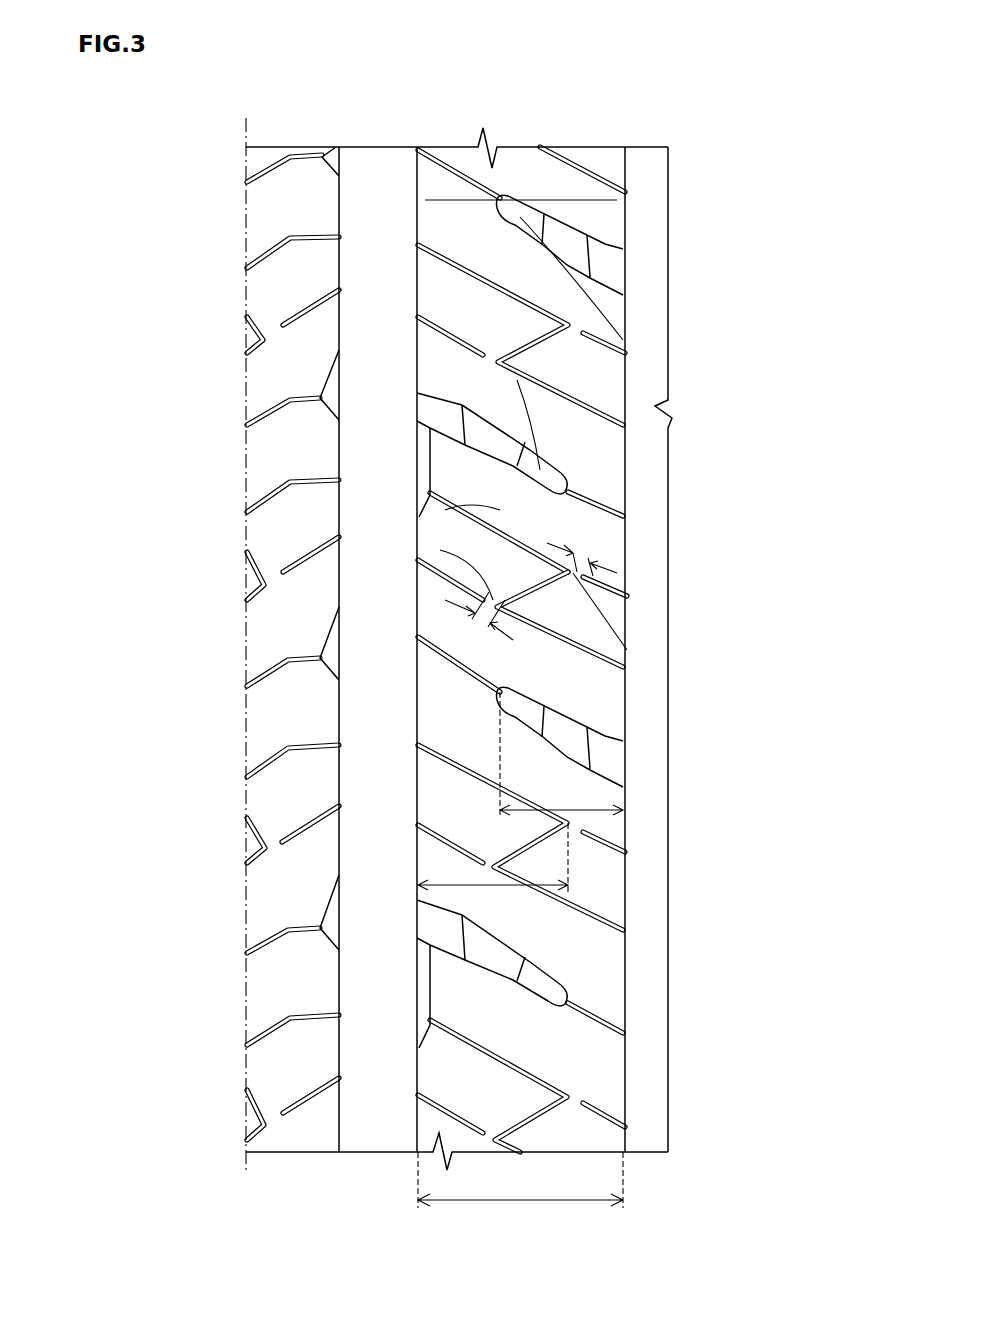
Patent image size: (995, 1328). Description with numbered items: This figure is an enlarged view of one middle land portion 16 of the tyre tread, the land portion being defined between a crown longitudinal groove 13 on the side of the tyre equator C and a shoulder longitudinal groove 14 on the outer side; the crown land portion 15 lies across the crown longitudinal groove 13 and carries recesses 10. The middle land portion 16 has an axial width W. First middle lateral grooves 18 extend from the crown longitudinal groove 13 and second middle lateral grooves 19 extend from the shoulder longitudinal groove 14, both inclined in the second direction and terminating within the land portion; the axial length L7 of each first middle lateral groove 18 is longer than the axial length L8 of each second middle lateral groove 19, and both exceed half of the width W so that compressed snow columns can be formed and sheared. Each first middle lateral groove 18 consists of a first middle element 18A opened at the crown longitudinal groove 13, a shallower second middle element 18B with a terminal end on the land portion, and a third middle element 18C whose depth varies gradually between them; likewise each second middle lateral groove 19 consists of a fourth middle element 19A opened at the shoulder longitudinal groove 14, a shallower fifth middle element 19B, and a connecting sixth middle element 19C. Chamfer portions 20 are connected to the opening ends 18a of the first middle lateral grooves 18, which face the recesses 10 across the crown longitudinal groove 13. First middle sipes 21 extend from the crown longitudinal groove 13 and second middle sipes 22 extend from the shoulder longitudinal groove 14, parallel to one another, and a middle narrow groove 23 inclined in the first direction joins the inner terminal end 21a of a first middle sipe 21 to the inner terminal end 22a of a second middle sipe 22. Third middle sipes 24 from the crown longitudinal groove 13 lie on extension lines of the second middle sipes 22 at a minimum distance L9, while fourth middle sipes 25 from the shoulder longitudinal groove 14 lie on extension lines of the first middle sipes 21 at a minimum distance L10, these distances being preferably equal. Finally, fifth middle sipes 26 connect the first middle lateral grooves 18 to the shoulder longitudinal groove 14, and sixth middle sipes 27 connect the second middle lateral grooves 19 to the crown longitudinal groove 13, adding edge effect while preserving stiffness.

The recess 10 is at (414, 410).
The crown longitudinal groove 13 is at (378, 186).
The shoulder longitudinal groove 14 is at (647, 180).
The crown land portion 15 is at (290, 186).
The middle land portion 16 is at (540, 180).
The first middle lateral groove 18 is at (132, 238).
The first middle element 18A is at (517, 380).
The second middle element 18B is at (438, 408).
The third middle element 18C is at (490, 438).
The opening end 18a is at (427, 470).
The second middle lateral groove 19 is at (766, 228).
The fourth middle element 19A is at (610, 265).
The fifth middle element 19B is at (600, 345).
The sixth middle element 19C is at (590, 290).
The chamfer portion 20 is at (445, 510).
The first middle sipe 21 is at (560, 558).
The inner terminal end 21a is at (600, 610).
The second middle sipe 22 is at (580, 660).
The inner terminal end 22a is at (445, 575).
The middle narrow groove 23 is at (535, 595).
The third middle sipe 24 is at (470, 575).
The fourth middle sipe 25 is at (605, 588).
The fifth middle sipe 26 is at (592, 502).
The sixth middle sipe 27 is at (460, 188).
The tyre equator C is at (246, 631).
The axial width of the middle land portion W is at (520, 1193).
The length of first middle lateral groove L7 is at (520, 884).
The length of second middle lateral groove L8 is at (615, 815).
The minimum distance between third middle sipe and second middle sipe L9 is at (488, 603).
The minimum distance between fourth middle sipe and first middle sipe L10 is at (590, 556).